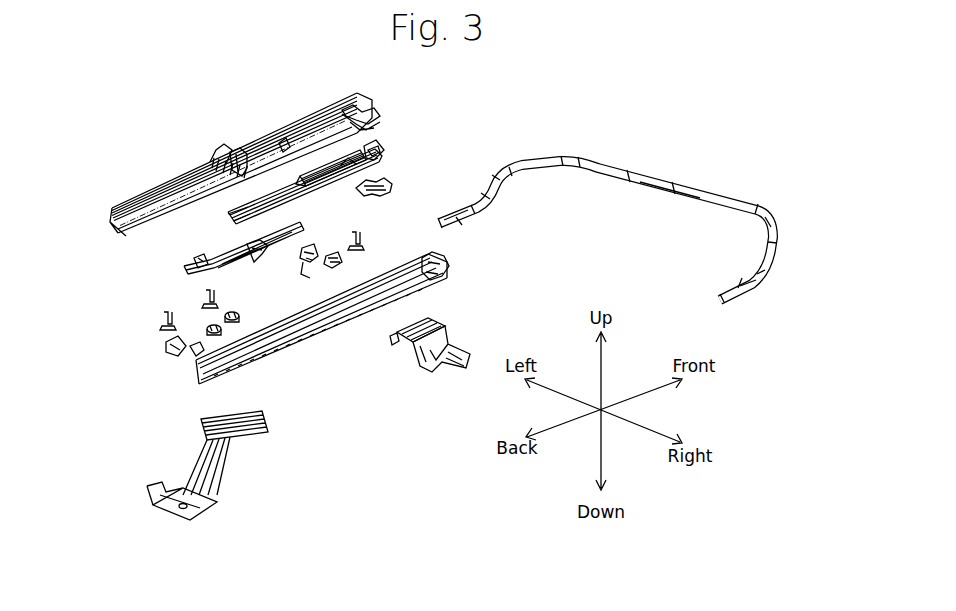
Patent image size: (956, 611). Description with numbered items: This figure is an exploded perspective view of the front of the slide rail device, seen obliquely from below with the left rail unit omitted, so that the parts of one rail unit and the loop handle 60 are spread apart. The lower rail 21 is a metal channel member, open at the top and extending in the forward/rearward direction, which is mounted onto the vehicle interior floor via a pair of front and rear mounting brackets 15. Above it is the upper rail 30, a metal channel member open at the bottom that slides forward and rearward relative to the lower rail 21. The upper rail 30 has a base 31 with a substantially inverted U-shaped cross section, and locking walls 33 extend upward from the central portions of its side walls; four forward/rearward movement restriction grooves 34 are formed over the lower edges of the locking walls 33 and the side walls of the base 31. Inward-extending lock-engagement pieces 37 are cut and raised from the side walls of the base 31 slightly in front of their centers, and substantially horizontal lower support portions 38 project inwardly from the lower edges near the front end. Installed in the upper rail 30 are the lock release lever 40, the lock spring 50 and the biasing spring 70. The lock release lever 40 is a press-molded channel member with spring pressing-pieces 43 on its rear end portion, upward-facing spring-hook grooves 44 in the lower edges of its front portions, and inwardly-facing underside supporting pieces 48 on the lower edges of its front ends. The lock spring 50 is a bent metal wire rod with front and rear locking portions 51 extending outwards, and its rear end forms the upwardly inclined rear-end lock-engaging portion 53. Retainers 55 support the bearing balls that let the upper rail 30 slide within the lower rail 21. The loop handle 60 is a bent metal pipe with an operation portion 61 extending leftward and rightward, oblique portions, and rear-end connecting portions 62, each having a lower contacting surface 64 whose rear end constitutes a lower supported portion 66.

The mounting bracket 15 is at (420, 356).
The lower rail 21 is at (446, 282).
The upper rail 30 is at (185, 192).
The base 31 is at (372, 96).
The locking wall 33 is at (236, 156).
The forward/rearward movement restriction groove 34 is at (220, 144).
The lock-engagement piece 37 is at (283, 142).
The lower support portion 38 is at (362, 127).
The lock release lever 40 is at (383, 150).
The spring pressing-piece 43 is at (236, 213).
The spring-hook groove 44 is at (332, 180).
The underside supporting piece 48 is at (380, 157).
The lock spring 50 is at (186, 269).
The locking portion 51 is at (258, 258).
The rear-end lock-engaging portion 53 is at (195, 259).
The retainer 55 is at (304, 264).
The loop handle 60 is at (627, 184).
The operation portion 61 is at (672, 194).
The rear-end connecting portion 62 is at (736, 284).
The lower contacting surface 64 is at (476, 218).
The lower supported portion 66 is at (458, 228).
The biasing spring 70 is at (396, 191).